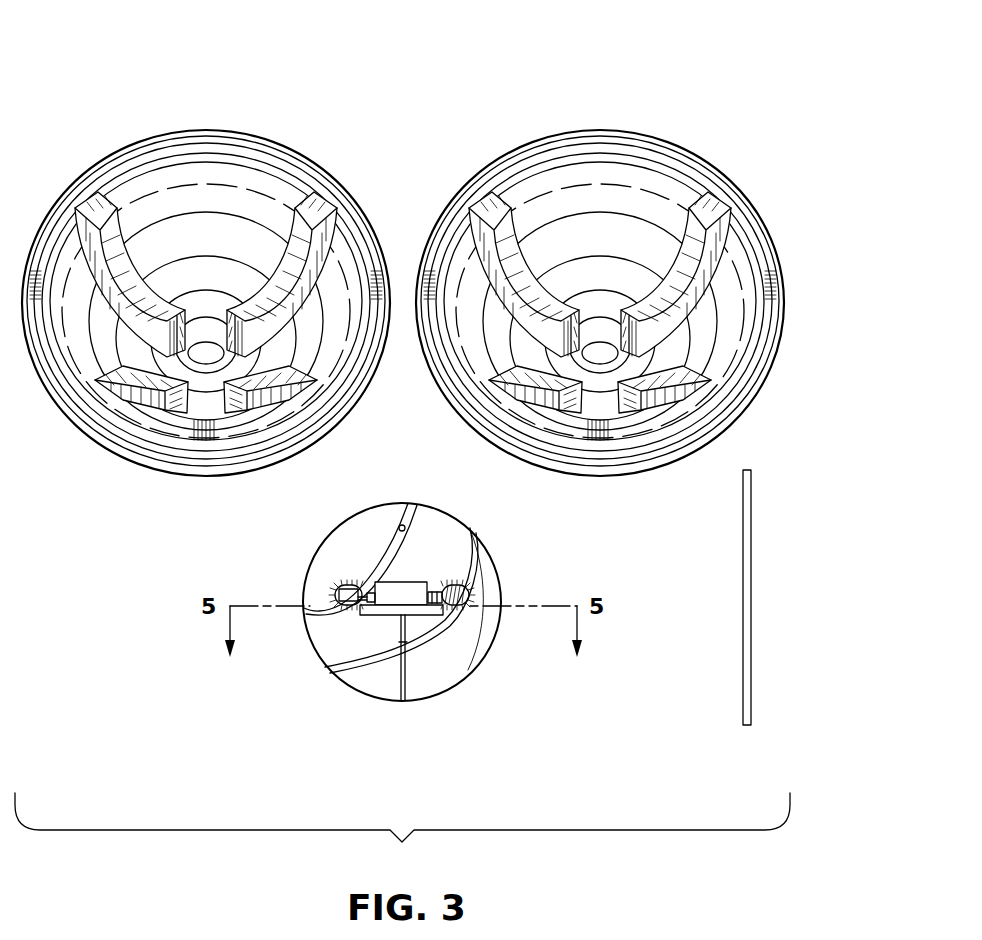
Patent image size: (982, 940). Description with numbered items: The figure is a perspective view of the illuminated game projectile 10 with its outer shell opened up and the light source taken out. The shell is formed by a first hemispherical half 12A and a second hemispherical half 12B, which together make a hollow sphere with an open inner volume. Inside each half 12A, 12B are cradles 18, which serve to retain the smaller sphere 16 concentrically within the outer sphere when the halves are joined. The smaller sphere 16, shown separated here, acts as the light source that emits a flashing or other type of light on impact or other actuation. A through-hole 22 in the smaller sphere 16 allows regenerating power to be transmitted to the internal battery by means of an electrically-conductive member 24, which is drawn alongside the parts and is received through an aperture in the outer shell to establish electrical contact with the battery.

The illuminated game projectile 10 is at (751, 76).
The first hemispherical half 12A is at (247, 133).
The second hemispherical half 12B is at (558, 133).
The smaller sphere 16 is at (434, 672).
The cradles 18 is at (96, 190).
The through-hole 22 is at (400, 522).
The electrically-conductive member 24 is at (743, 571).